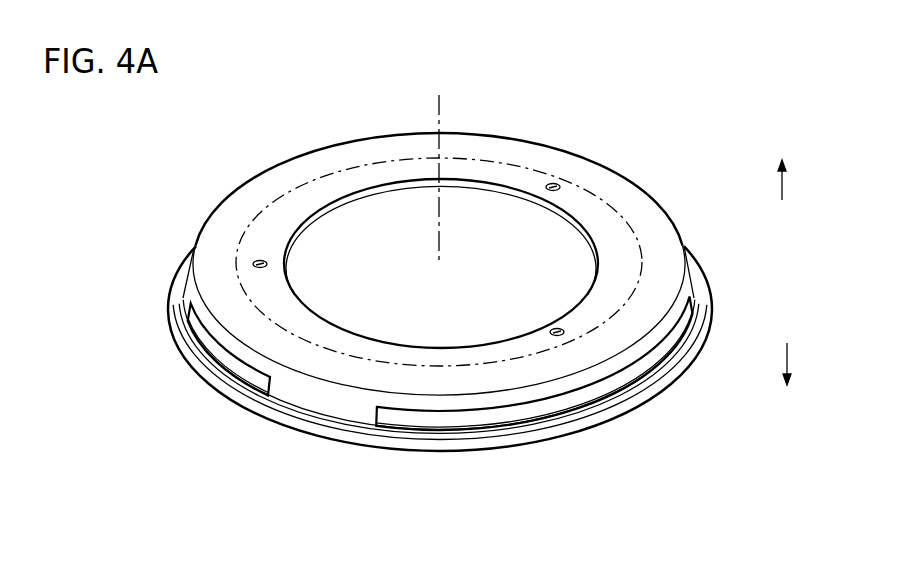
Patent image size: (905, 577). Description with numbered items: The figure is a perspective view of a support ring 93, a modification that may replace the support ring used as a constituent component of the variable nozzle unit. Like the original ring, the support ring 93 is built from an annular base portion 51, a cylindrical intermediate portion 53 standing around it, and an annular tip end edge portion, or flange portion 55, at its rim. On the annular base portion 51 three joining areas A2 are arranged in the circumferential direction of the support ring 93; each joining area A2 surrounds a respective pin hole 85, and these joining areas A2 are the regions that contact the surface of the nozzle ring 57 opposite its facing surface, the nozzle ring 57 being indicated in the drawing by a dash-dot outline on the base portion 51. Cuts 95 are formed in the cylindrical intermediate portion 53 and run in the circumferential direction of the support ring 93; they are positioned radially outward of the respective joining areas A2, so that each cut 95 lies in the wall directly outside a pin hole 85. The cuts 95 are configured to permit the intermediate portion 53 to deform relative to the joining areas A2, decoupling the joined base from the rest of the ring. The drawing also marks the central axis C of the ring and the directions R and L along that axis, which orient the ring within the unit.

The support ring 93 is at (322, 145).
The annular base portion 51 is at (225, 232).
The cylindrical intermediate portion 53 is at (324, 408).
The annular tip end edge portion (flange portion) 55 is at (484, 449).
The nozzle ring 57 is at (420, 366).
The cuts 95 is at (240, 368).
The pin holes 85 is at (554, 182).
The joining areas A2 is at (570, 195).
The central axis C is at (446, 101).
The right direction R is at (781, 164).
The left direction L is at (788, 381).